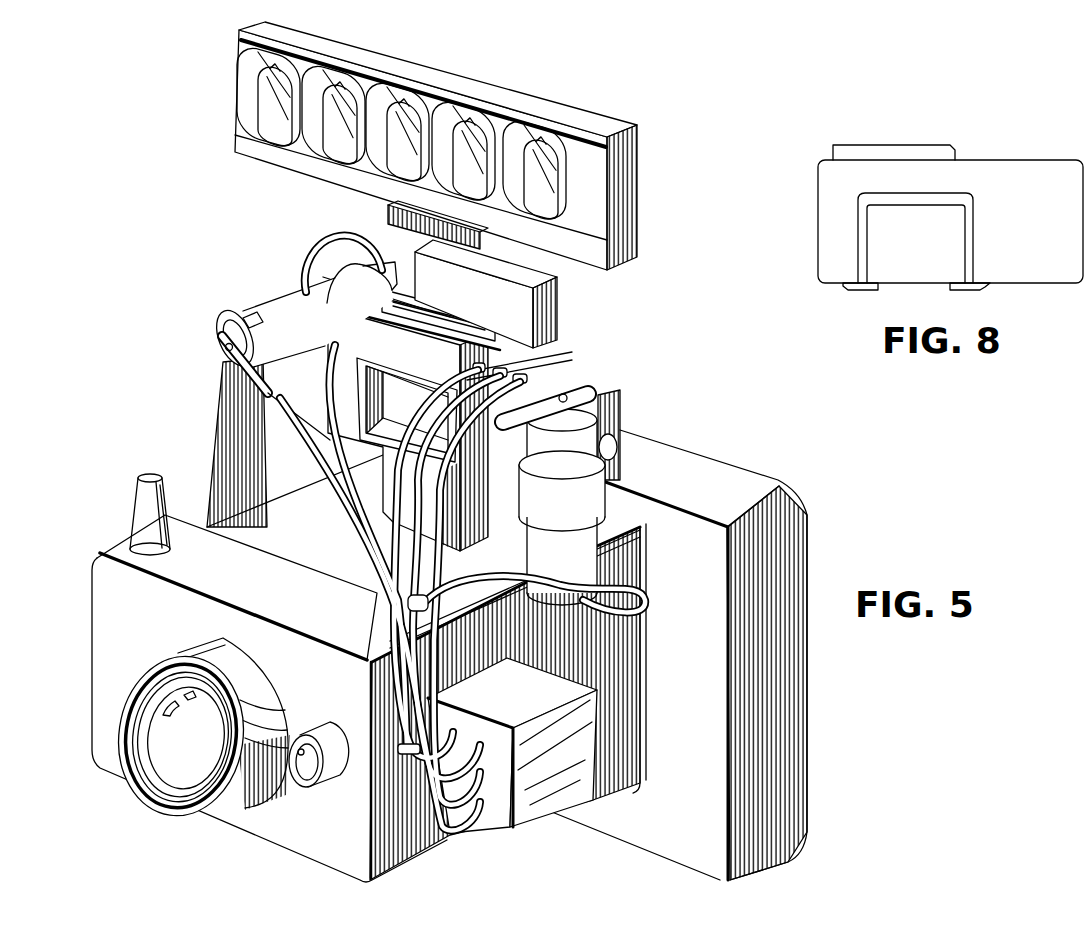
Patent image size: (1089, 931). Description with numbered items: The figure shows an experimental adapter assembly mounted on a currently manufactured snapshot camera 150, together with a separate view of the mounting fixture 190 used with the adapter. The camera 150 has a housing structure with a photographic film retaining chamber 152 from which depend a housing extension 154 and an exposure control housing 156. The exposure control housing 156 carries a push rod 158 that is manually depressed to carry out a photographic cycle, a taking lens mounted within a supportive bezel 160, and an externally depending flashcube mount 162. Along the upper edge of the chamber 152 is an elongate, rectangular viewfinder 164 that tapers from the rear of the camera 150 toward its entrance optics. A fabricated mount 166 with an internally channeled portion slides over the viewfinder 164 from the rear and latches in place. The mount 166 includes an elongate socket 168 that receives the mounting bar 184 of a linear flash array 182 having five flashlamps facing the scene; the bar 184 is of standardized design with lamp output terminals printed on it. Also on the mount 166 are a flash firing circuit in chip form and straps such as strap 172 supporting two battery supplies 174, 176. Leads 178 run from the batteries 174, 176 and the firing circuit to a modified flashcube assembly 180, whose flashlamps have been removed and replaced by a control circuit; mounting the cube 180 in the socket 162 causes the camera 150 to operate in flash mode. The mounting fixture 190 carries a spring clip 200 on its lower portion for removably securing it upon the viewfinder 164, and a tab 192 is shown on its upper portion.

In FIG. 5, the snapshot camera 150 is at (814, 494).
In FIG. 5, the photographic film retaining chamber 152 is at (787, 573).
In FIG. 5, the housing extension 154 is at (297, 497).
In FIG. 5, the exposure control housing 156 is at (104, 643).
In FIG. 5, the push rod 158 is at (150, 507).
In FIG. 5, the supportive bezel 160 is at (178, 750).
In FIG. 5, the flashcube mount 162 is at (496, 600).
In FIG. 5, the viewfinder 164 is at (372, 442).
In FIG. 5, the mount 166 is at (340, 318).
In FIG. 5, the elongate socket 168 is at (487, 326).
In FIG. 5, the strap 172 is at (312, 282).
In FIG. 5, the battery supply 174 is at (615, 424).
In FIG. 5, the battery supply 176 is at (272, 307).
In FIG. 5, the leads 178 is at (450, 543).
In FIG. 5, the modified flashcube assembly 180 is at (518, 805).
In FIG. 5, the linear flash array 182 is at (642, 174).
In FIG. 5, the mounting bar 184 is at (388, 210).
In FIG. 8, the mounting fixture 190 is at (1020, 170).
In FIG. 8, the tab 192 is at (925, 156).
In FIG. 8, the spring clip 200 is at (868, 290).